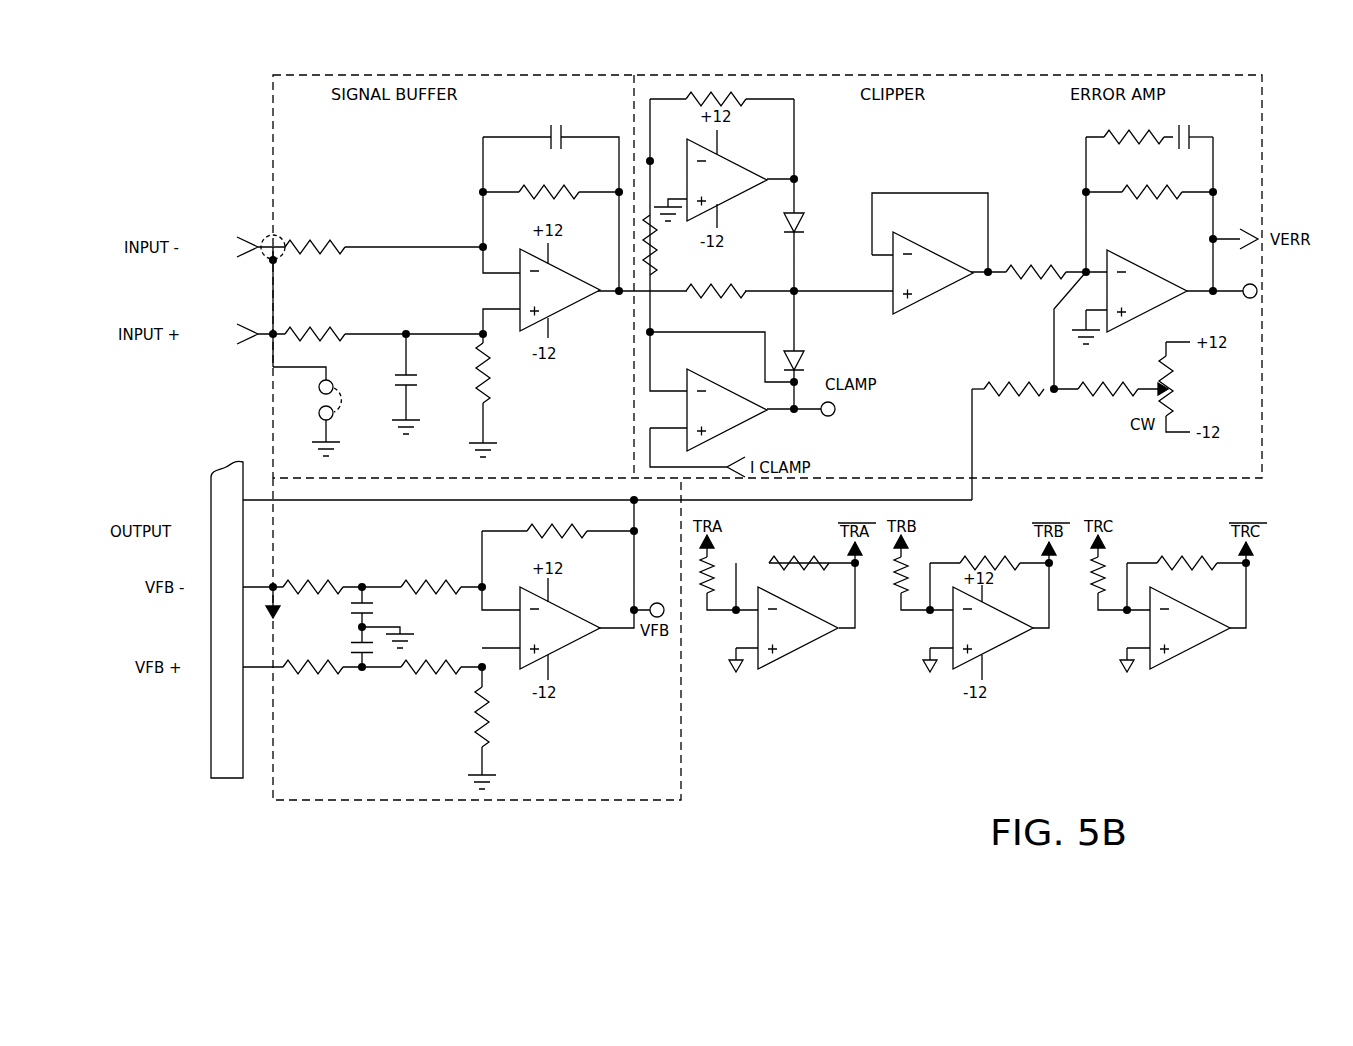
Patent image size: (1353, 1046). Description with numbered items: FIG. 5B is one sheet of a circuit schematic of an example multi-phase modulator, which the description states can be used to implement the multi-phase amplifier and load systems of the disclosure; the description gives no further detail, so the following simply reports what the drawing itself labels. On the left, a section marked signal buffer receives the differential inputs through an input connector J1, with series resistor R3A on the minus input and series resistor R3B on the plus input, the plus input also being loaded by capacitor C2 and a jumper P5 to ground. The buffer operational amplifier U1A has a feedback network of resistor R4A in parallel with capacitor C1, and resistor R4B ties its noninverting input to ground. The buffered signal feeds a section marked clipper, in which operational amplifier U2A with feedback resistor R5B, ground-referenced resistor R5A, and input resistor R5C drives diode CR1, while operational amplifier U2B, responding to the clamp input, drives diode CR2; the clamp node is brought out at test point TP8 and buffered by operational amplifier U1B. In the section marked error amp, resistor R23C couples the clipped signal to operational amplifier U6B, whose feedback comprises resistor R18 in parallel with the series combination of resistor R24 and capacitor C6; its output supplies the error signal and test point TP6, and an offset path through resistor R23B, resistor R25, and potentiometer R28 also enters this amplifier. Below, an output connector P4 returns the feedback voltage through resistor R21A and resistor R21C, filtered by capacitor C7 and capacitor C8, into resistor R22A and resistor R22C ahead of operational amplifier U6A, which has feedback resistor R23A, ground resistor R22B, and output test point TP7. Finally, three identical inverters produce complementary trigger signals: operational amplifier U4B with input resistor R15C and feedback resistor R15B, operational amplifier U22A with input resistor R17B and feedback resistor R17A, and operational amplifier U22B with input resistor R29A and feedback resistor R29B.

The input jack J1 is at (263, 235).
The resistor 1K R3A is at (315, 239).
The resistor 1K R3B is at (315, 326).
The resistor 3.3K R4A is at (551, 183).
The resistor 3.3K R4B is at (504, 375).
The capacitor .01 C1 is at (561, 130).
The capacitor .01 C2 is at (423, 388).
The signal buffer op-amp U1A is at (559, 291).
The jumper P5 is at (307, 404).
The resistor 10K R5A is at (667, 245).
The resistor 10K R5B is at (722, 91).
The resistor 10K R5C is at (713, 282).
The clipper op-amp U2A is at (725, 180).
The clipper op-amp U2B is at (725, 410).
The diode CR1 is at (810, 223).
The diode CR2 is at (810, 361).
The test point TP8 is at (845, 410).
The buffer op-amp U1B is at (930, 273).
The resistor 10K R23C is at (1047, 263).
The error amplifier op-amp U6B is at (1146, 291).
The resistor 1M R18 is at (1149, 183).
The resistor 1K R24 is at (1129, 128).
The capacitor .01 C6 is at (1196, 133).
The test point TP6 is at (1271, 292).
The resistor 10K R23B is at (1008, 390).
The resistor 10M R25 is at (1108, 390).
The potentiometer 10K R28 is at (1182, 386).
The output connector P4 is at (227, 608).
The resistor 100K R21A is at (317, 580).
The resistor 100K R21C is at (313, 659).
The resistor 10K R22A is at (420, 579).
The resistor 10K R22B is at (505, 717).
The resistor 10K R22C is at (433, 650).
The resistor 10K R23A is at (553, 523).
The capacitor .001 C7 is at (362, 607).
The capacitor .001 C8 is at (358, 637).
The feedback op-amp U6A is at (559, 629).
The test point TP7 is at (653, 600).
The resistor R15C is at (716, 576).
The resistor R15B is at (799, 554).
The trigger inverter op-amp U4B is at (798, 628).
The resistor R17B is at (910, 576).
The resistor R17A is at (990, 554).
The trigger inverter op-amp U22A is at (993, 629).
The resistor R29A is at (1107, 576).
The resistor R29B is at (1187, 554).
The trigger inverter op-amp U22B is at (1189, 628).